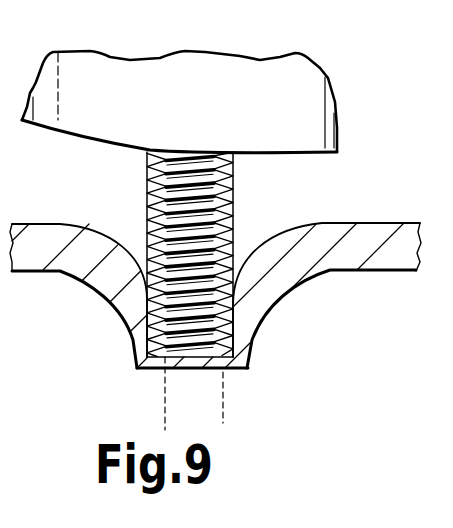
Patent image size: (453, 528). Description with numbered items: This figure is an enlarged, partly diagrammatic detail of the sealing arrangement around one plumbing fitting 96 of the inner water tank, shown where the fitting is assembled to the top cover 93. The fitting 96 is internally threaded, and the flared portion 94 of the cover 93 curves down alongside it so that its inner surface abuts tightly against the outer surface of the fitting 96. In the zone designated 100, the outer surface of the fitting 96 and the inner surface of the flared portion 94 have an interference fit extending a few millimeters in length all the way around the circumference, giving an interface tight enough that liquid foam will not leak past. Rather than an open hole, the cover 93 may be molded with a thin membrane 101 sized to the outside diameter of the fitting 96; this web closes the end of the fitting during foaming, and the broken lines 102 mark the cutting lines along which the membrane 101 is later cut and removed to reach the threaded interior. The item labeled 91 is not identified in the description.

The screw head 91 is at (318, 78).
The plumbing fitting 96 is at (233, 210).
The top cover 93 is at (43, 272).
The flared portion 94 is at (130, 313).
The interference fit area 100 is at (250, 331).
The membrane 101 is at (140, 409).
The broken lines 102 is at (224, 407).